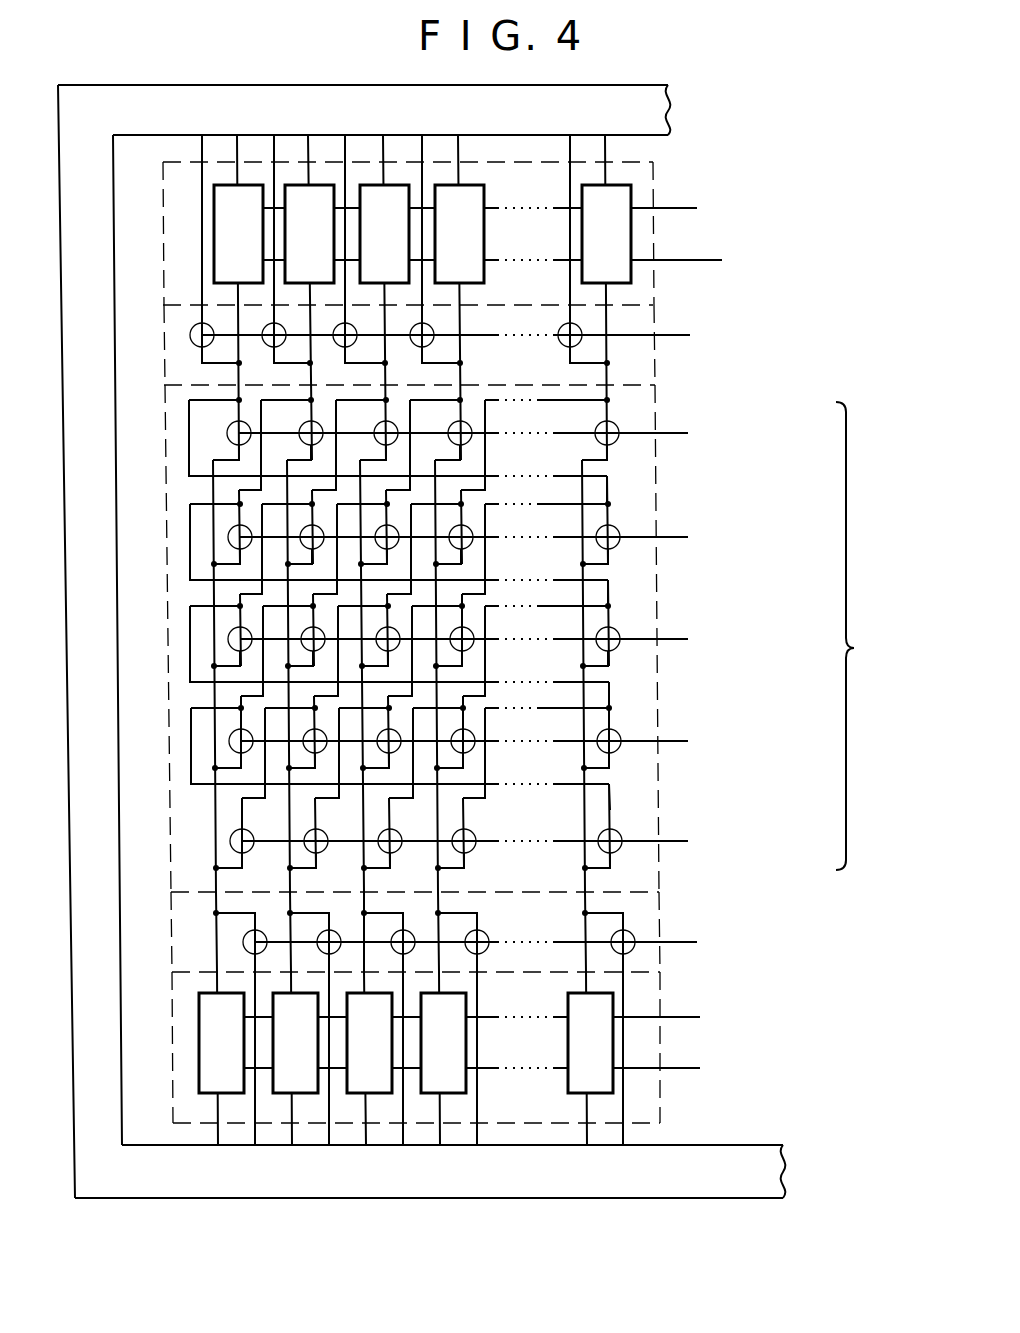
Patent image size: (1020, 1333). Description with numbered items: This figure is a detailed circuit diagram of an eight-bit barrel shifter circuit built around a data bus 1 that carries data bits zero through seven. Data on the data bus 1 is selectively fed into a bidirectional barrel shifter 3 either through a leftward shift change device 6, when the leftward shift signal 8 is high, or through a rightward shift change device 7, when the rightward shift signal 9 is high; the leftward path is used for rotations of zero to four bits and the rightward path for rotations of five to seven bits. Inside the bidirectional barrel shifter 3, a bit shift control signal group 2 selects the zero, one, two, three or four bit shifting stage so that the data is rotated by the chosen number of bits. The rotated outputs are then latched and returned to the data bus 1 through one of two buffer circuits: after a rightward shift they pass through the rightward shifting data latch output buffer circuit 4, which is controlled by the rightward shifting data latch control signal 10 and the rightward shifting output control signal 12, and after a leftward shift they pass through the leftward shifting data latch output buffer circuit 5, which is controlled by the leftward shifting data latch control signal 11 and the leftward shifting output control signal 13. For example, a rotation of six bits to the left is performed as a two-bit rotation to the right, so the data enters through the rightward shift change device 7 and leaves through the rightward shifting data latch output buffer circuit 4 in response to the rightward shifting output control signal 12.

The data bus 1 is at (680, 108).
The bit shift control signal group 2 is at (716, 636).
The bidirectional barrel shifter 3 is at (165, 611).
The rightward shifting data latch output buffer circuit 4 is at (163, 215).
The leftward shifting data latch output buffer circuit 5 is at (172, 1048).
The leftward shift change device 6 is at (163, 331).
The rightward shift change device 7 is at (172, 929).
The leftward shift signal 8 is at (682, 334).
The rightward shift signal 9 is at (690, 940).
The rightward shifting data latch control signal 10 is at (682, 259).
The leftward shifting data latch control signal 11 is at (690, 1015).
The rightward shifting output control signal 12 is at (675, 207).
The leftward shifting output control signal 13 is at (690, 1066).